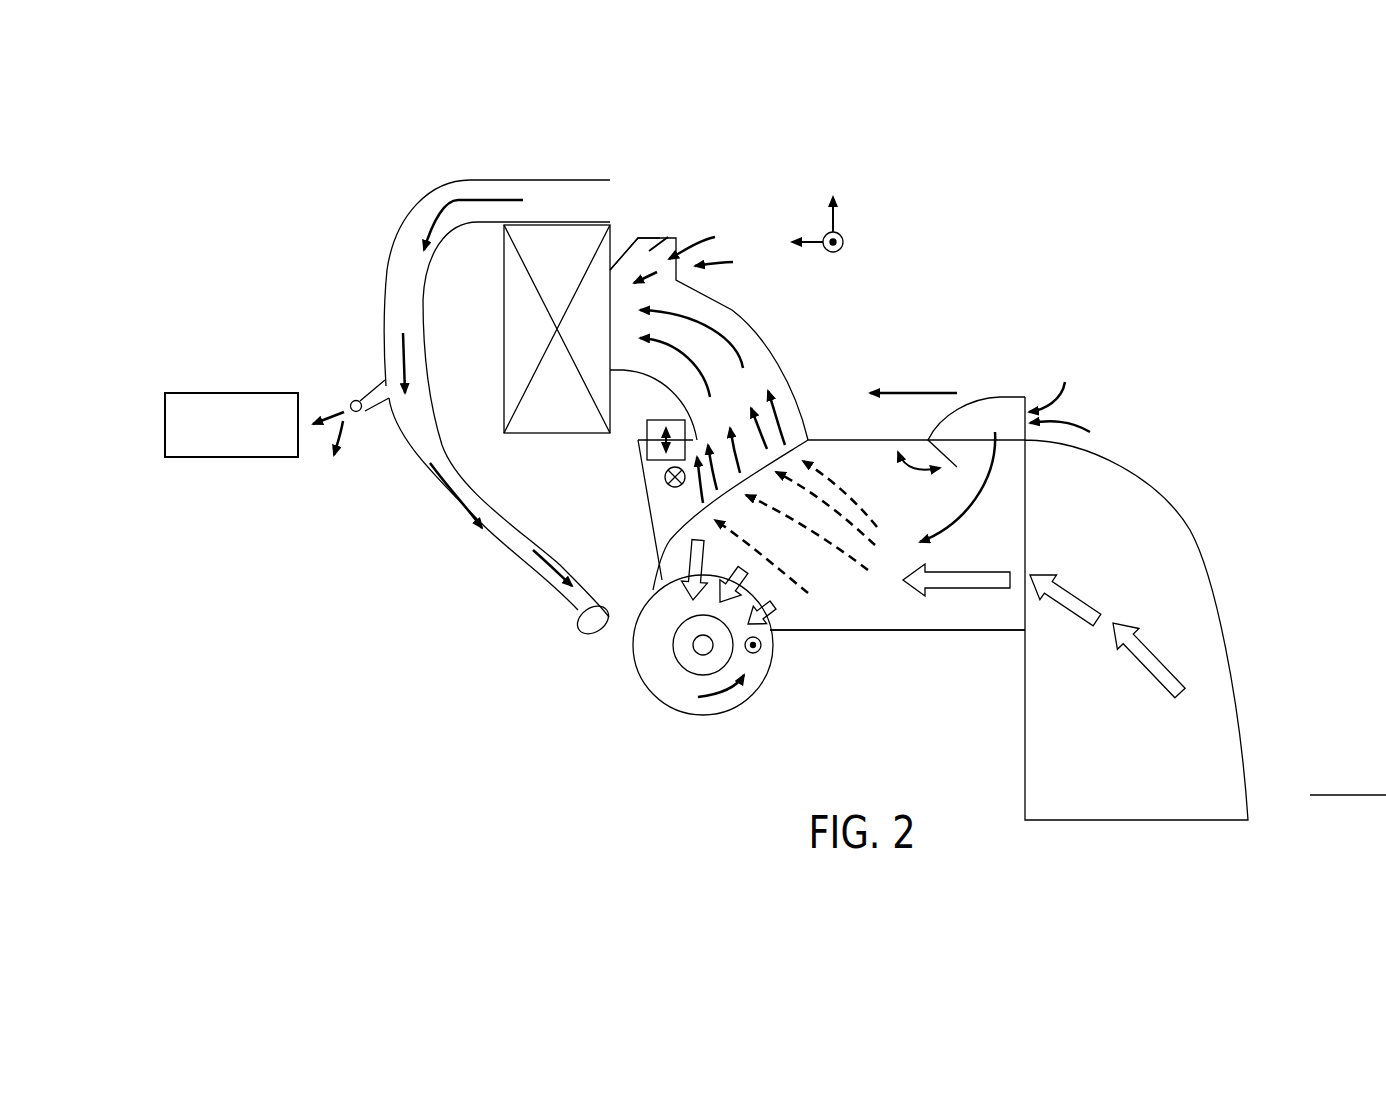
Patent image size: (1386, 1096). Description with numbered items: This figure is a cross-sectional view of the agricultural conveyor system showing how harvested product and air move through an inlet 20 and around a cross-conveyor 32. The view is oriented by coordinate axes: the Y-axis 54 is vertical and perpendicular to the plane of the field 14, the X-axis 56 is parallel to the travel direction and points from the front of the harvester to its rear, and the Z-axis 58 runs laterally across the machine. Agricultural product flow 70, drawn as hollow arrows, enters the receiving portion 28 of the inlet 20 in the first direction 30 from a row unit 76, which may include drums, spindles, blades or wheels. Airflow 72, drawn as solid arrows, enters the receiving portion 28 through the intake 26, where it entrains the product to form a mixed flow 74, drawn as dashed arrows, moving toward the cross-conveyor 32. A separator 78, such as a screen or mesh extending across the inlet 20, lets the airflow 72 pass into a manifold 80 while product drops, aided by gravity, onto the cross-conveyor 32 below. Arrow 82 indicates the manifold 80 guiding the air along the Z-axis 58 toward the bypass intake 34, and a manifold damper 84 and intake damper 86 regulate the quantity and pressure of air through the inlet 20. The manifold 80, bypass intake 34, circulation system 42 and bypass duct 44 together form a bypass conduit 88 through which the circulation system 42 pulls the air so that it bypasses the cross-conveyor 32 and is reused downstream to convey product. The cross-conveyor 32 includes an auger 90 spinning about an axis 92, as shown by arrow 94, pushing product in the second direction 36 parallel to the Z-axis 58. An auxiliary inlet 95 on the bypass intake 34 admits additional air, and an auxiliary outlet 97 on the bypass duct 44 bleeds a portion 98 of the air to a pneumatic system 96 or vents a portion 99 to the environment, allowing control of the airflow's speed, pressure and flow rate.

The field 14 is at (1353, 794).
The inlet 20 is at (926, 706).
The intake 26 is at (968, 404).
The receiving portion 28 is at (957, 623).
The first direction 30 is at (912, 393).
The cross-conveyor 32 is at (738, 702).
The bypass intake 34 is at (740, 318).
The second direction 36 is at (760, 652).
The circulation system 42 is at (516, 335).
The bypass duct 44 is at (386, 338).
The Y-axis 54 is at (838, 218).
The X-axis 56 is at (820, 241).
The Z-axis 58 is at (842, 248).
The agricultural product flow 70 is at (679, 557).
The airflow 72 is at (447, 198).
The mixed flow 74 is at (840, 503).
The row unit 76 is at (1123, 805).
The separator 78 is at (668, 534).
The manifold 80 is at (644, 506).
The arrow 82 is at (664, 478).
The manifold damper 84 is at (647, 428).
The intake damper 86 is at (660, 240).
The bypass conduit 88 is at (683, 126).
The auger 90 is at (683, 664).
The axis 92 is at (697, 642).
The arrow 94 is at (727, 692).
The auxiliary inlet 95 is at (648, 238).
The pneumatic system 96 is at (240, 392).
The auxiliary outlet 97 is at (374, 394).
The portion of the airflow 98 is at (340, 414).
The portion of the airflow 99 is at (348, 437).